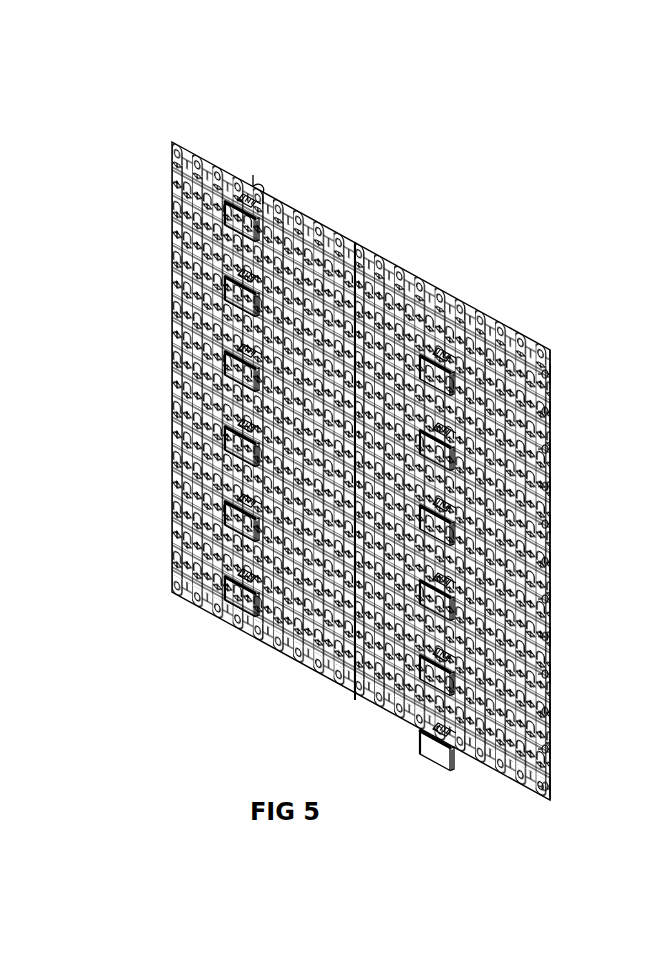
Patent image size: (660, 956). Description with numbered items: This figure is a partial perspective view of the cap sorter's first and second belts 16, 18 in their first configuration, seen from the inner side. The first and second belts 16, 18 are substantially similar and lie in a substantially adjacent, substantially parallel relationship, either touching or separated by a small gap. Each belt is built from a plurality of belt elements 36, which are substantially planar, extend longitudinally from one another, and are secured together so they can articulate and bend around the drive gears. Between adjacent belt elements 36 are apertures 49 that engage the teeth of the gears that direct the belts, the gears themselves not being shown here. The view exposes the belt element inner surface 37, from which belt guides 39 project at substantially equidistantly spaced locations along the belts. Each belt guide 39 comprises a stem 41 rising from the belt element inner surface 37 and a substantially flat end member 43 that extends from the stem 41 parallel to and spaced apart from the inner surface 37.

The first belt 16 is at (458, 297).
The second belt 18 is at (321, 215).
The belt element 36 is at (550, 350).
The belt element inner surface 37 is at (233, 163).
The belt guide 39 is at (217, 207).
The stem 41 is at (262, 180).
The end member 43 is at (242, 228).
The aperture 49 is at (175, 158).